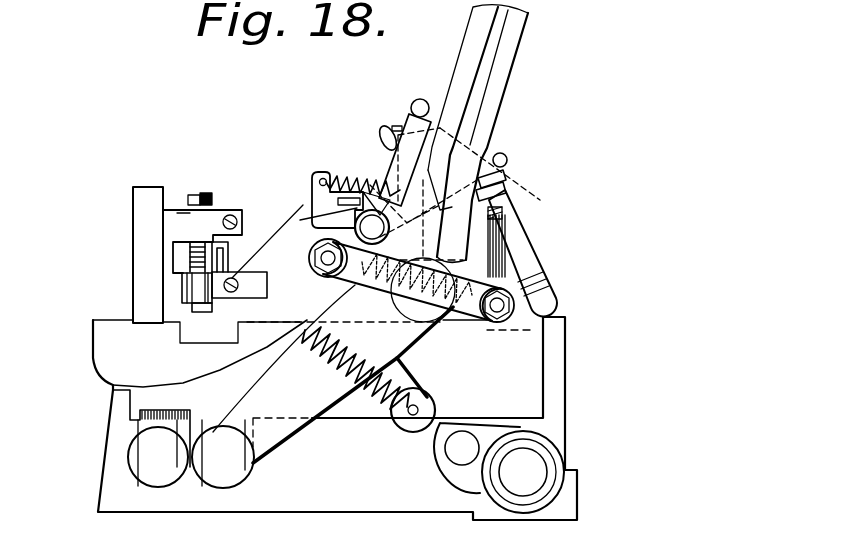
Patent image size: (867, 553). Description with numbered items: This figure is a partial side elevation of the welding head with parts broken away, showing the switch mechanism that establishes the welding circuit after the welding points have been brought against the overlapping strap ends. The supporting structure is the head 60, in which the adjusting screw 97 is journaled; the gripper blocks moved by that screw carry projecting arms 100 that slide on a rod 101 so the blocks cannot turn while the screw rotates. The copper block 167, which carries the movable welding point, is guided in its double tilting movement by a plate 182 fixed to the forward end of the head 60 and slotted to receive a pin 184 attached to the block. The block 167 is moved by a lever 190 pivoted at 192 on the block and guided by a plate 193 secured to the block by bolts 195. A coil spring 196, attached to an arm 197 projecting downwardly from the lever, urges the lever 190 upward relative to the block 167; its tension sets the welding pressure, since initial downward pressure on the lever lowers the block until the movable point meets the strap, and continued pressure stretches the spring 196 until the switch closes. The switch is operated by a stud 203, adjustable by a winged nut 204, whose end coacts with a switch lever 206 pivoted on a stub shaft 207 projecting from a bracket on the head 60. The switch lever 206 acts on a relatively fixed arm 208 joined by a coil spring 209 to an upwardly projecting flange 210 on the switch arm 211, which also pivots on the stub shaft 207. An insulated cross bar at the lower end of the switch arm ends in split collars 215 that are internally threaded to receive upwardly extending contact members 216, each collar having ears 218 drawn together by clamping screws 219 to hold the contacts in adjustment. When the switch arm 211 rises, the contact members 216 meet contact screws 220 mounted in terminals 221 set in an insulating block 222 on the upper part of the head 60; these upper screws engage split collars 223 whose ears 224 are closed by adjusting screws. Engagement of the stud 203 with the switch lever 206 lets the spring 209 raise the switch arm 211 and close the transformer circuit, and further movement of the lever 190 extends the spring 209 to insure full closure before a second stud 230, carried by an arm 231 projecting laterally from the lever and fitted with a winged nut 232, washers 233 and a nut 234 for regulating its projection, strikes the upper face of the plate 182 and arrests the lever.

The head 60 is at (98, 487).
The screw 97 is at (527, 467).
The projecting arms 100 is at (473, 477).
The rod 101 is at (455, 448).
The block 167 is at (347, 422).
The plate 182 is at (533, 243).
The pin 184 is at (548, 277).
The lever 190 is at (520, 65).
The pivot 192 is at (217, 433).
The plate 193 is at (443, 318).
The bolts 195 is at (317, 274).
The coil spring 196 is at (340, 360).
The arm 197 is at (436, 398).
The stud 203 is at (412, 104).
The winged nut 204 is at (382, 126).
The switch lever 206 is at (515, 212).
The stub shaft 207 is at (313, 213).
The arm 208 is at (395, 195).
The coil spring 209 is at (355, 180).
The flange 210 is at (313, 172).
The switch arm 211 is at (272, 242).
The split collars 215 is at (183, 287).
The contact members 216 is at (192, 310).
The ears 218 is at (238, 293).
The clamping screws 219 is at (236, 282).
The contact screws 220 is at (206, 193).
The terminals 221 is at (177, 213).
The insulating block 222 is at (140, 187).
The split collars 223 is at (180, 207).
The ears 224 is at (226, 215).
The stud 230 is at (505, 197).
The arm 231 is at (487, 135).
The winged nut 232 is at (475, 108).
The washers 233 is at (500, 180).
The nut 234 is at (506, 190).